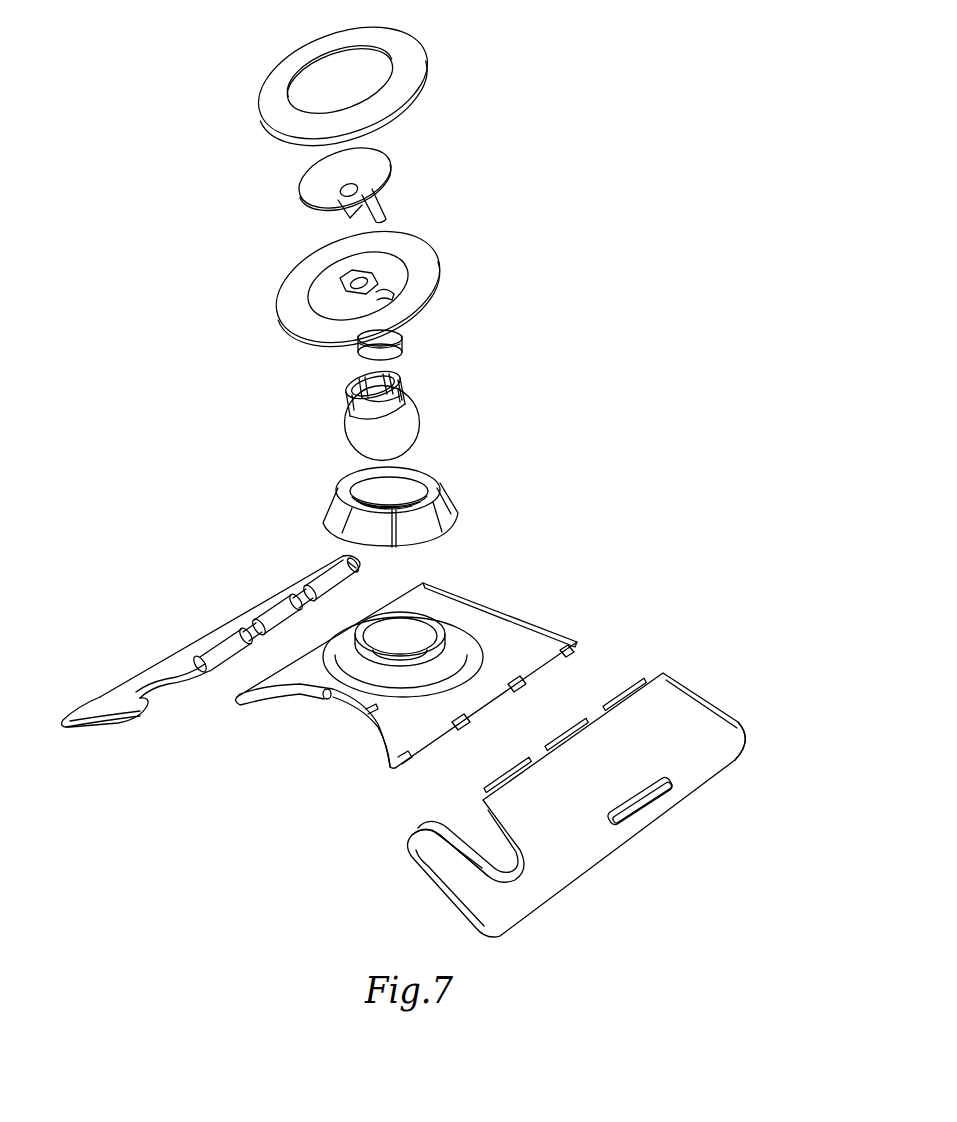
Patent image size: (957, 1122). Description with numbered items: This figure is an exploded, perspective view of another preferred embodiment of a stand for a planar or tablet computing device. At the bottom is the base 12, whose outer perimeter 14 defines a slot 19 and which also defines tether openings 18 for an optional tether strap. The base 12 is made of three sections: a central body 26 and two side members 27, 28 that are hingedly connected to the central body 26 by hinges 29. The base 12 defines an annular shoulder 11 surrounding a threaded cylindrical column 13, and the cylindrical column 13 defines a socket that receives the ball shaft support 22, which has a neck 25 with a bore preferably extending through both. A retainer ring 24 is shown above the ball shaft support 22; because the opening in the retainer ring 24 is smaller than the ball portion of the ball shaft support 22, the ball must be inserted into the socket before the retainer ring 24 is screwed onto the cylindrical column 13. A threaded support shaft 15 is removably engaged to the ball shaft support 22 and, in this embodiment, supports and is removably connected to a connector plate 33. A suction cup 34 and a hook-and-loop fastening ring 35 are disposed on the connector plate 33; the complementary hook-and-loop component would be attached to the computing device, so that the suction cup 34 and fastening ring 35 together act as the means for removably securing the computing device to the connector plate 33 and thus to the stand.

The annular shoulder 11 is at (430, 676).
The base 12 is at (413, 685).
The threaded cylindrical column 13 is at (363, 657).
The outer perimeter 14 is at (580, 805).
The threaded support shaft 15 is at (398, 338).
The tether openings 18 is at (643, 803).
The slot 19 is at (478, 840).
The ball shaft support 22 is at (403, 430).
The retainer ring 24 is at (338, 516).
The neck 25 is at (398, 376).
The central body 26 is at (507, 626).
The side member 27 is at (735, 735).
The side member 28 is at (223, 638).
The hinges 29 is at (352, 592).
The connector plate 33 is at (312, 272).
The suction cup 34 is at (368, 166).
The Velcro (hook and loop) fastening ring 35 is at (292, 68).